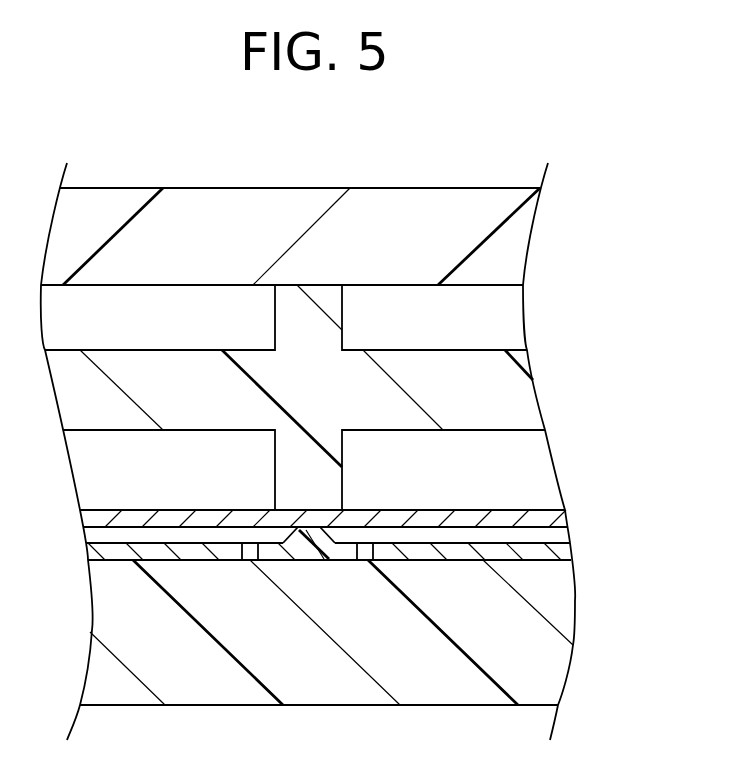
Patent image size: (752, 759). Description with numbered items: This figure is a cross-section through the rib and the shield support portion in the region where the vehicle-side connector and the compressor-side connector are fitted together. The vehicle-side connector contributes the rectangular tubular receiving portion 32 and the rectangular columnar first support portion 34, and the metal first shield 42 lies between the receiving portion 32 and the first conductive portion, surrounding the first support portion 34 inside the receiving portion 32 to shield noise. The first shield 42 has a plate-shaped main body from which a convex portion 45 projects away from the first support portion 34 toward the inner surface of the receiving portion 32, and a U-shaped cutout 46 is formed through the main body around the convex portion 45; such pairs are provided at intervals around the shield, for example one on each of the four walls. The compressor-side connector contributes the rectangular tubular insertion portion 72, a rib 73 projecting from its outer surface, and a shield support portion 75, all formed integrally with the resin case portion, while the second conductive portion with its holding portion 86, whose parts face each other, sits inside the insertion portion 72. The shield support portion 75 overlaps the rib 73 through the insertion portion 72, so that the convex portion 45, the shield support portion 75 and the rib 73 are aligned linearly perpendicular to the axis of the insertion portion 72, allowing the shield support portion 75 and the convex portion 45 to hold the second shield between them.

The receiving portion 32 is at (426, 200).
The first support portion 34 is at (558, 592).
The first shield 42 is at (565, 550).
The convex portion 45 is at (303, 548).
The cutout 46 is at (363, 560).
The insertion portion 72 is at (525, 403).
The rib 73 is at (330, 302).
The shield support portion 75 is at (327, 483).
The holding portion 86 is at (570, 518).